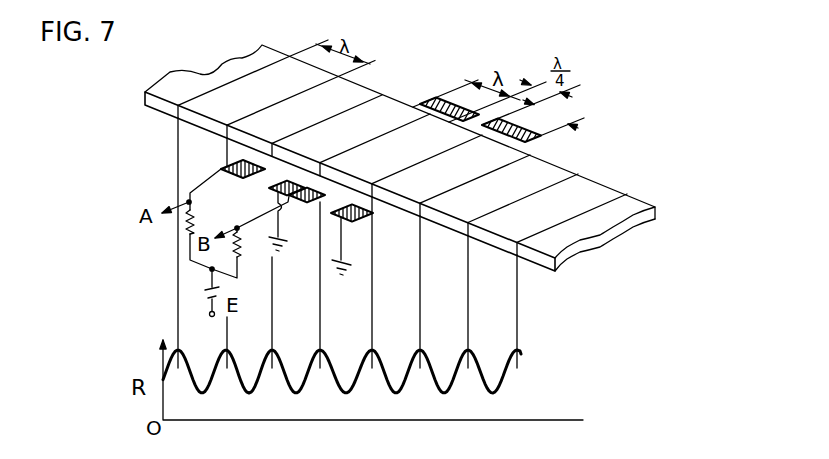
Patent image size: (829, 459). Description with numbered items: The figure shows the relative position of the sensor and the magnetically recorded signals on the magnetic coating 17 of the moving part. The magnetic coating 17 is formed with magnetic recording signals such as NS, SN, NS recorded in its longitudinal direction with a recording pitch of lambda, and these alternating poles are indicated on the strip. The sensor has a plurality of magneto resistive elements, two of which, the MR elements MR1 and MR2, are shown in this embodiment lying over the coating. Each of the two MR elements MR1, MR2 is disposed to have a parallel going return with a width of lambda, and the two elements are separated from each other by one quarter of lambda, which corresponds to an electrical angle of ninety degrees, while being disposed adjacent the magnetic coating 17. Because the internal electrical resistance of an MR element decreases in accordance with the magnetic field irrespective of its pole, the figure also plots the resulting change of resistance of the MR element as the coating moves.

The magnetic coating 17 is at (647, 199).
The MR element MR1 is at (412, 106).
The MR element MR2 is at (510, 148).